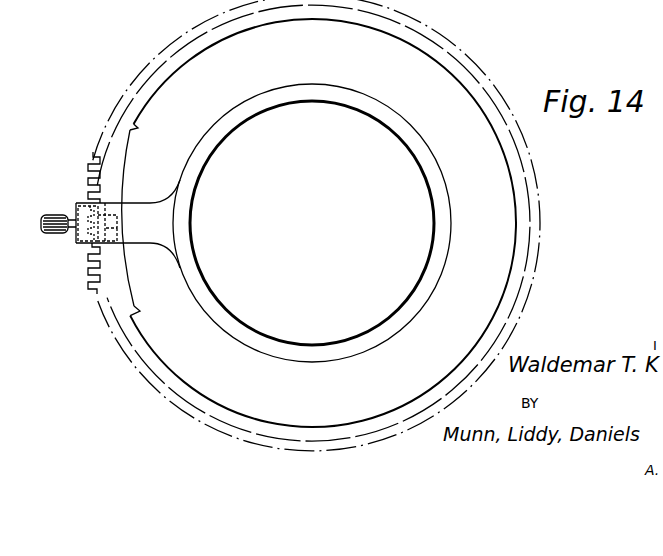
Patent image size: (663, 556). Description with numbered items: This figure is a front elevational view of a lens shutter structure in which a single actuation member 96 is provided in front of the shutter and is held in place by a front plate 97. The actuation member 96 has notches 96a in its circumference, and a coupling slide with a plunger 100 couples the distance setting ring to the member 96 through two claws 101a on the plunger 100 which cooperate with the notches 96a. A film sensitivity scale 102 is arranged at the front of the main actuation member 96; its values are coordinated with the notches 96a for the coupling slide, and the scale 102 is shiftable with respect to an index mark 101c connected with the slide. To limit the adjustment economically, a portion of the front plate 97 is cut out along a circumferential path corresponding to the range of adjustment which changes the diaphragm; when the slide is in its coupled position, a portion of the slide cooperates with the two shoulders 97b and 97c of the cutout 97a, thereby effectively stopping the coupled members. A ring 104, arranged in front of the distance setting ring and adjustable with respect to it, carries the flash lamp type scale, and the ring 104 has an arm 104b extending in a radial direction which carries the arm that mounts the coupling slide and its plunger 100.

The single actuation member 96 is at (137, 338).
The notches 96a is at (93, 269).
The front plate 97 is at (438, 107).
The cutout 97a is at (128, 288).
The shoulder 97b is at (138, 311).
The shoulder 97c is at (138, 128).
The plunger 100 is at (48, 233).
The claws 101a is at (78, 203).
The index mark 101c is at (88, 184).
The film sensitivity scale 102 is at (98, 150).
The ring 104 is at (326, 87).
The arm 104b is at (143, 231).